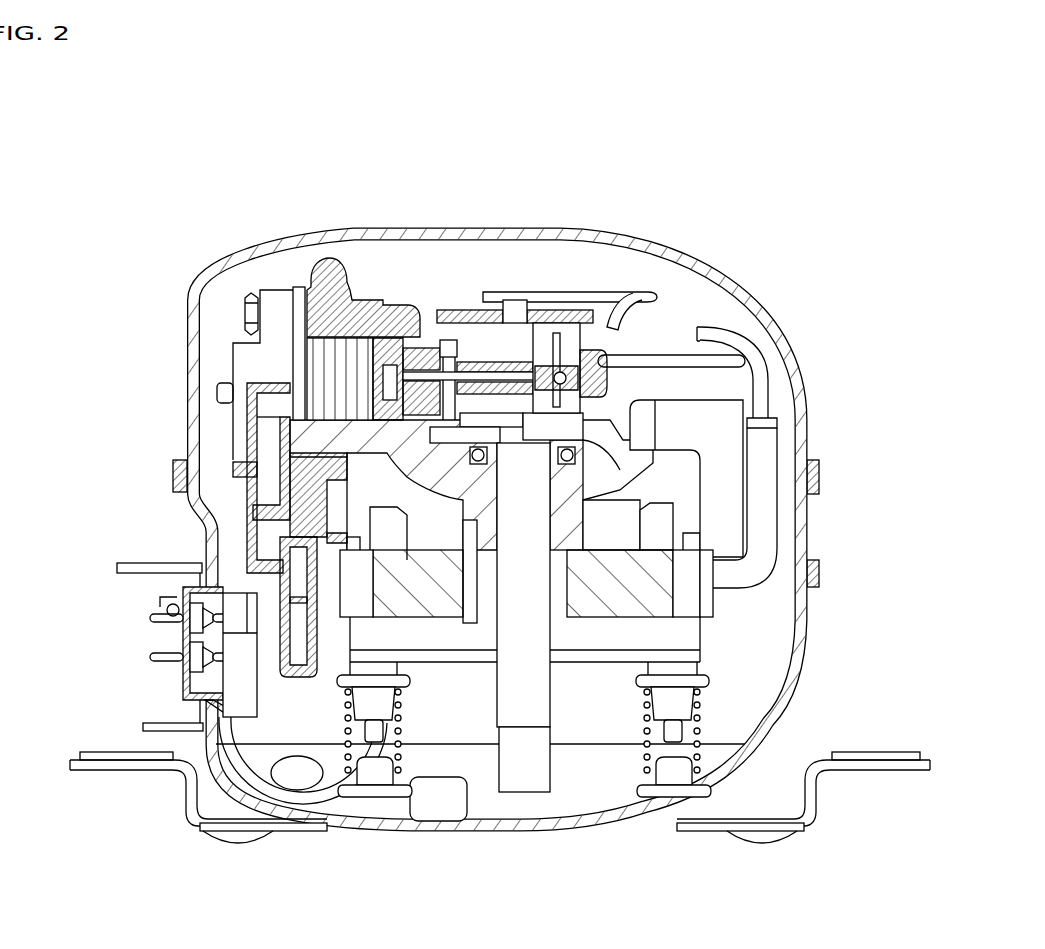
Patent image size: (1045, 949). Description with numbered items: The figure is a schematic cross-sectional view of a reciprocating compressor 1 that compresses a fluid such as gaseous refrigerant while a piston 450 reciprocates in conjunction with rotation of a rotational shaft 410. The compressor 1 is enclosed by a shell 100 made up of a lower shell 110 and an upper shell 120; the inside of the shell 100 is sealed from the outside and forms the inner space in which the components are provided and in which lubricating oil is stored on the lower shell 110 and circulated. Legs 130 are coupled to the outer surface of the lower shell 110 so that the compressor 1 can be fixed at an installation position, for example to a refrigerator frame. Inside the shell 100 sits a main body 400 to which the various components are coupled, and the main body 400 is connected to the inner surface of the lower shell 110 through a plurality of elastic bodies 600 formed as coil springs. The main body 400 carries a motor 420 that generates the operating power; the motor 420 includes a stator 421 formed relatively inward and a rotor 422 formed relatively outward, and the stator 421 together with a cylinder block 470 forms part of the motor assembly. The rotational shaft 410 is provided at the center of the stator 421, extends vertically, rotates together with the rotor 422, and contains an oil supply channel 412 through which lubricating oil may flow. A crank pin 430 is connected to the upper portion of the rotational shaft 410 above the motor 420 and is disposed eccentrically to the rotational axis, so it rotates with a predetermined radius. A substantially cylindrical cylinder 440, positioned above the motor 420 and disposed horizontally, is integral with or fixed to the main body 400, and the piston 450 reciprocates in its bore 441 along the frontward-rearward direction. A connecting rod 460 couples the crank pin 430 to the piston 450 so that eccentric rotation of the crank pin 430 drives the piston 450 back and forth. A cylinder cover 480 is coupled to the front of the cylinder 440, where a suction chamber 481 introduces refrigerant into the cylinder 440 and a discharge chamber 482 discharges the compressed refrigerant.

The reciprocating compressor 1 is at (155, 125).
The shell 100 is at (896, 395).
The lower shell 110 is at (803, 538).
The upper shell 120 is at (803, 404).
The legs 130 is at (123, 768).
The main body 400 is at (741, 672).
The rotational shaft 410 is at (528, 770).
The oil supply channel 412 is at (543, 340).
The motor 420 is at (897, 590).
The stator 421 is at (650, 577).
The rotor 422 is at (685, 607).
The crank pin 430 is at (578, 335).
The cylinder 440 is at (118, 305).
The bore 441 is at (330, 350).
The piston 450 is at (398, 345).
The connecting rod 460 is at (485, 365).
The cylinder block 470 is at (320, 371).
The cylinder cover 480 is at (273, 320).
The suction chamber 481 is at (272, 412).
The discharge chamber 482 is at (300, 295).
The elastic body 600 is at (392, 775).